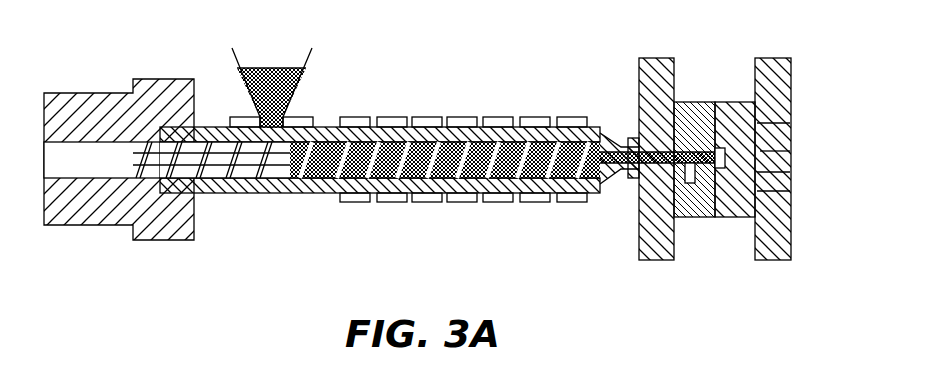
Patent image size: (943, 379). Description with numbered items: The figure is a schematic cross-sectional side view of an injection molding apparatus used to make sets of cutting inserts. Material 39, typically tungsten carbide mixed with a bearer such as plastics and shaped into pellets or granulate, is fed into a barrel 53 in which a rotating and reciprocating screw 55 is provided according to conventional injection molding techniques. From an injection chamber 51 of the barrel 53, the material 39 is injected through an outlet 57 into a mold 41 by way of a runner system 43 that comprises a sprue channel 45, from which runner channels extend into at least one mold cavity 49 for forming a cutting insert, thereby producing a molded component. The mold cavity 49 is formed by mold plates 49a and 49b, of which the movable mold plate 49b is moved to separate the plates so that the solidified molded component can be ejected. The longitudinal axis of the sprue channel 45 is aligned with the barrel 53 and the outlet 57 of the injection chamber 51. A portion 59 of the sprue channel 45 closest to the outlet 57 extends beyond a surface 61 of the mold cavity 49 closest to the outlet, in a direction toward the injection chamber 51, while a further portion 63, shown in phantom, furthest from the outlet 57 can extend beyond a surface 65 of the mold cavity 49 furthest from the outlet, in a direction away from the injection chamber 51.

The material 39 is at (284, 67).
The mold 41 is at (712, 79).
The runner system 43 is at (669, 136).
The sprue channel 45 is at (697, 217).
The mold cavity 49 is at (790, 172).
The mold plate 49a is at (690, 100).
The movable mold plate 49b is at (738, 100).
The injection chamber 51 is at (596, 141).
The barrel 53 is at (393, 202).
The screw 55 is at (295, 180).
The outlet 57 is at (629, 185).
The portion of the sprue channel 59 is at (690, 175).
The surface of the mold cavity 61 is at (790, 191).
The further portion of the sprue channel 63 is at (790, 151).
The surface of the mold cavity 65 is at (757, 123).